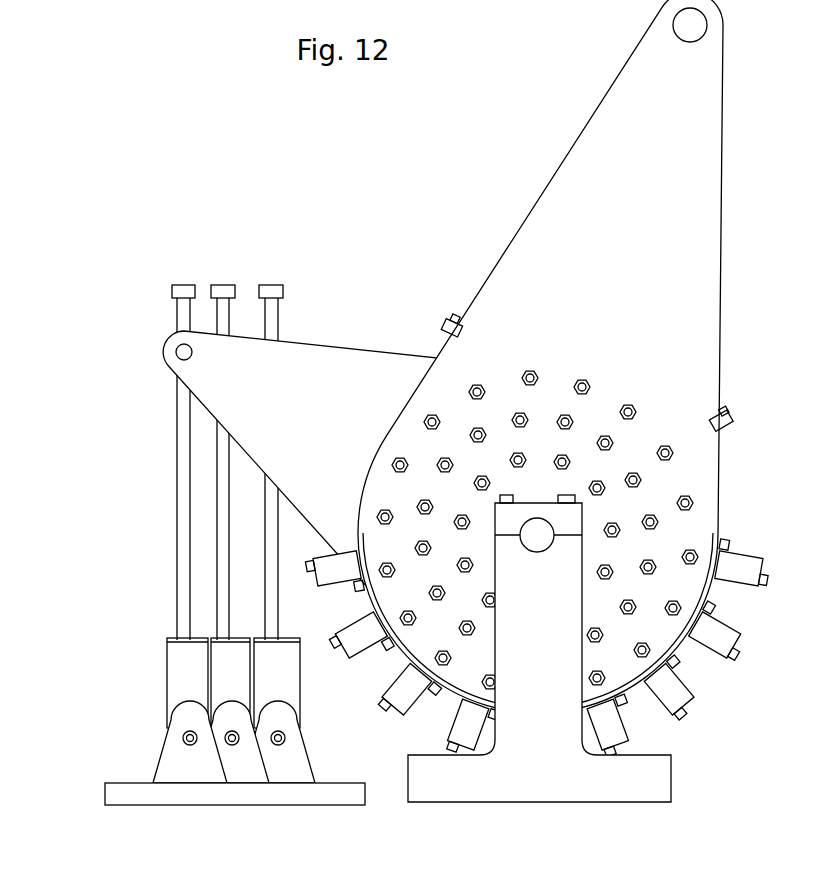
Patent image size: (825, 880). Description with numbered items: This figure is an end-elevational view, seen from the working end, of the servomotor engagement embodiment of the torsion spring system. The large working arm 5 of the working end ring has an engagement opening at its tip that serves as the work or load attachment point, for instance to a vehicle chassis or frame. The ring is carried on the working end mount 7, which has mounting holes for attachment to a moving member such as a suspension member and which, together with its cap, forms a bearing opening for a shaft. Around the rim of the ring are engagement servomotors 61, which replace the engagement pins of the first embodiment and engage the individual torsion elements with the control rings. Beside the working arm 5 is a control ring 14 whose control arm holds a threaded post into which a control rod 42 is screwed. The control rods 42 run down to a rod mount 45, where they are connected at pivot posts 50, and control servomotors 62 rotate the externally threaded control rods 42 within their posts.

The working arm 5 is at (702, 218).
The working end mount 7 is at (638, 767).
The control ring 14 is at (317, 360).
The control rod 42 is at (188, 455).
The rod mount 45 is at (130, 793).
The pivot post 50 is at (197, 772).
The engagement servomotor 61 is at (732, 495).
The control servomotor 62 is at (180, 675).